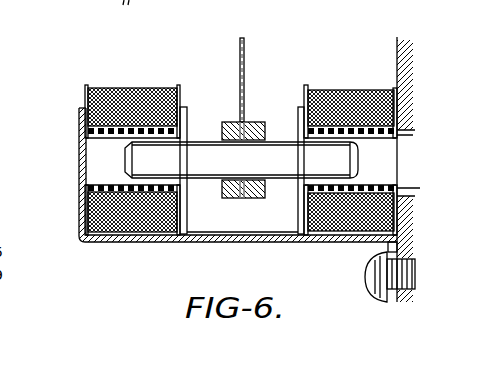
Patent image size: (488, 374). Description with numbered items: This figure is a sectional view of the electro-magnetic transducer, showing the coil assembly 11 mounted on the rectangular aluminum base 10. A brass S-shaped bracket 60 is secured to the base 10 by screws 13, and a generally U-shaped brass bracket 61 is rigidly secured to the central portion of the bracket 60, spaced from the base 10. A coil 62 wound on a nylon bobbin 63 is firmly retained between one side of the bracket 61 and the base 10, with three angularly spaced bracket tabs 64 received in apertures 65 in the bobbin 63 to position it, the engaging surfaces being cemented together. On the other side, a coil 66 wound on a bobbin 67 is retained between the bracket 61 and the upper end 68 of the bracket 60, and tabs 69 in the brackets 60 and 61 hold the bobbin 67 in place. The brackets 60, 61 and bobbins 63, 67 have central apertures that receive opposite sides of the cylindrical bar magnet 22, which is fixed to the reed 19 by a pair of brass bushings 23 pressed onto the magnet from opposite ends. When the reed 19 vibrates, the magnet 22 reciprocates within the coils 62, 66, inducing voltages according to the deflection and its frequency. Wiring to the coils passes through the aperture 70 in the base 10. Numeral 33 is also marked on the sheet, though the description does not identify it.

The base 10 is at (398, 42).
The coil assembly 11 is at (66, 121).
The screws 13 is at (365, 270).
The reed 19 is at (240, 92).
The bar magnet 22 is at (210, 138).
The brass bushings 23 is at (250, 122).
The member 33 is at (8, 200).
The S-shaped bracket 60 is at (126, 245).
The U-shaped bracket 61 is at (200, 231).
The coil 62 is at (345, 90).
The bobbin 63 is at (308, 90).
The bracket tabs 64 is at (297, 213).
The apertures 65 is at (303, 100).
The coil 66 is at (125, 88).
The bobbin 67 is at (87, 86).
The upper end 68 is at (83, 108).
The tabs 69 is at (83, 212).
The aperture 70 is at (425, 169).